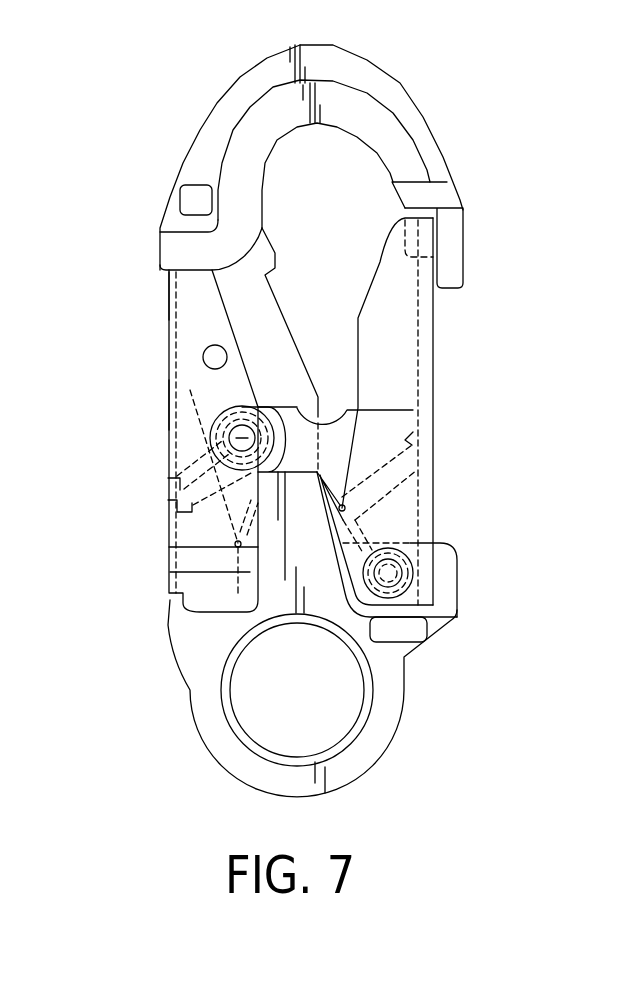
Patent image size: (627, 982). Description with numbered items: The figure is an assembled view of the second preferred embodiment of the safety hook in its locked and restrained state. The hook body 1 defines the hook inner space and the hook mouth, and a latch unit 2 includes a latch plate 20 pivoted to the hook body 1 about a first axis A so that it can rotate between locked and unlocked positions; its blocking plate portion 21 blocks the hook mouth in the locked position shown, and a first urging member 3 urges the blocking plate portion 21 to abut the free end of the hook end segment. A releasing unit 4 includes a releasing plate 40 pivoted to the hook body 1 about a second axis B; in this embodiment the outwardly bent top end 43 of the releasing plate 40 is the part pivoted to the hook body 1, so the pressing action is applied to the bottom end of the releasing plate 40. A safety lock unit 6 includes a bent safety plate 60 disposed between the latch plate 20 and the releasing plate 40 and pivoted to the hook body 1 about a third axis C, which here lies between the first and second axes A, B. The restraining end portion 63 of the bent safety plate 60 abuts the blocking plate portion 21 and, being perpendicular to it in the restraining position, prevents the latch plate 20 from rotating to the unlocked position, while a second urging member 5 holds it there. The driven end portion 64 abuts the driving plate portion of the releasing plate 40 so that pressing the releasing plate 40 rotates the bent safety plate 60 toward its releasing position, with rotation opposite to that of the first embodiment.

The hook body 1 is at (181, 716).
The latch unit 2 is at (445, 367).
The latch plate 20 is at (444, 397).
The blocking plate portion 21 is at (440, 330).
The first urging member 3 is at (418, 500).
The releasing unit 4 is at (157, 367).
The releasing plate 40 is at (167, 403).
The top end 43 is at (168, 294).
The second urging member 5 is at (167, 480).
The safety lock unit 6 is at (281, 398).
The bent safety plate 60 is at (339, 403).
The restraining end portion 63 is at (437, 424).
The driven end portion 64 is at (165, 498).
The first axis A is at (388, 573).
The second axis B is at (204, 348).
The third axis C is at (240, 438).